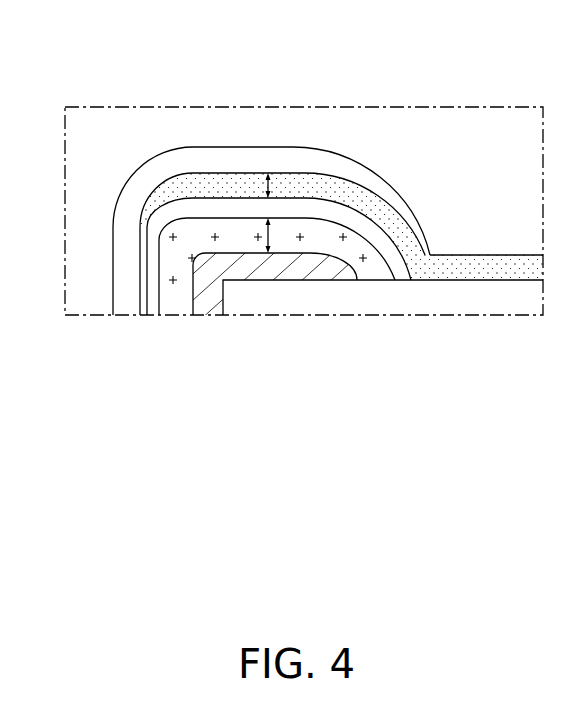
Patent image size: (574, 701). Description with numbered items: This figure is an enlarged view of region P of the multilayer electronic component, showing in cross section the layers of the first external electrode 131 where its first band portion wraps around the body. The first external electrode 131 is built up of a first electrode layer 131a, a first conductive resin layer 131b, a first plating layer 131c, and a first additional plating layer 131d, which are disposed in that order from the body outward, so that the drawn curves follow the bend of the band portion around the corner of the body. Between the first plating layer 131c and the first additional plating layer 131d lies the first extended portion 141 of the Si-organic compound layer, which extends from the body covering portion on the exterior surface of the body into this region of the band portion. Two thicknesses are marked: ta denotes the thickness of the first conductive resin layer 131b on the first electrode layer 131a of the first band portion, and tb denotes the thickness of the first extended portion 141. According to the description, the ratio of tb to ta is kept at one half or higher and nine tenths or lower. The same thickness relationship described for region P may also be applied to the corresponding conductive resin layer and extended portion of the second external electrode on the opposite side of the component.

The first external electrode 131 is at (270, 388).
The first electrode layer 131a is at (213, 315).
The first conductive resin layer 131b is at (177, 315).
The first plating layer 131c is at (150, 315).
The first additional plating layer 131d is at (128, 315).
The first extended portion 141 is at (320, 193).
The thickness of the first conductive resin layer ta is at (267, 242).
The thickness of the first extended portion tb is at (266, 190).
The region P is at (327, 512).